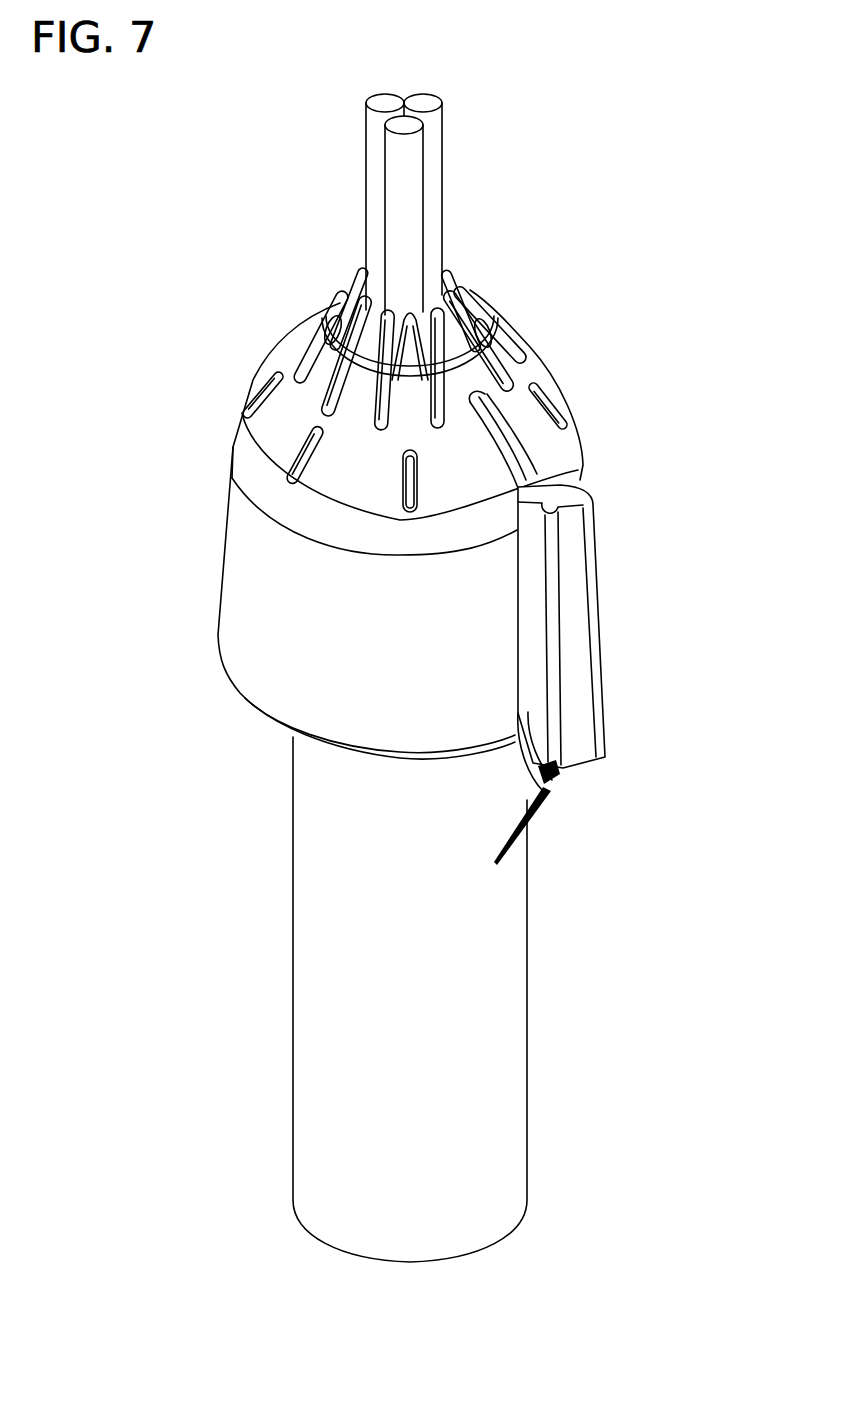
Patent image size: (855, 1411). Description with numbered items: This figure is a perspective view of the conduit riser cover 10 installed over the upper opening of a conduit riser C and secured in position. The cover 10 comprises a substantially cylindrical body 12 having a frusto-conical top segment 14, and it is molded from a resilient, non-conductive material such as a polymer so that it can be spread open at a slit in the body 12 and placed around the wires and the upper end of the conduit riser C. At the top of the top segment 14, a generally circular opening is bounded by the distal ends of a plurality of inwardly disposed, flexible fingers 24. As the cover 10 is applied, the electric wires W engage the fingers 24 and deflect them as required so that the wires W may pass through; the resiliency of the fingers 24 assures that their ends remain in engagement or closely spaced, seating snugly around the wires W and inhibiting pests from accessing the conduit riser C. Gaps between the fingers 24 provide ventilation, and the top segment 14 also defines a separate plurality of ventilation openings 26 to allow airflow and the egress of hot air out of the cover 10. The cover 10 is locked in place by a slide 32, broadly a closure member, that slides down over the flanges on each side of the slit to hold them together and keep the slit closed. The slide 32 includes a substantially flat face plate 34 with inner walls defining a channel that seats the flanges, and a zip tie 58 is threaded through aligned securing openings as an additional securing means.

The electric wires W is at (435, 200).
The conduit riser C is at (498, 1055).
The conduit riser cover 10 is at (612, 312).
The body 12 is at (250, 613).
The top segment 14 is at (367, 454).
The fingers 24 is at (355, 332).
The ventilation openings 26 is at (262, 438).
The slide 32 is at (595, 579).
The face plate 34 is at (587, 582).
The zip tie 58 is at (550, 795).